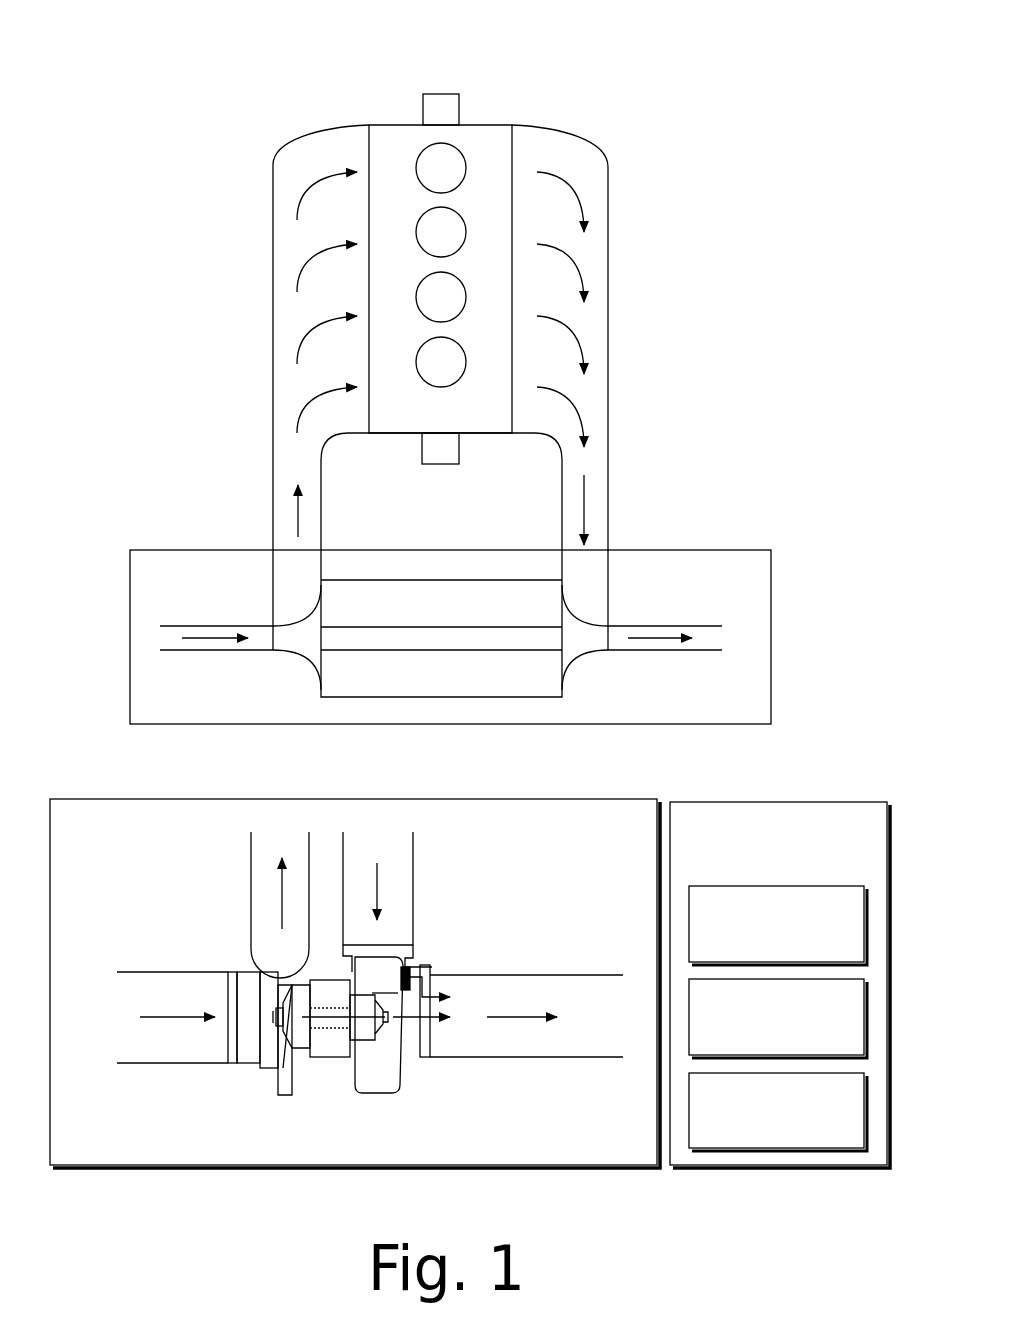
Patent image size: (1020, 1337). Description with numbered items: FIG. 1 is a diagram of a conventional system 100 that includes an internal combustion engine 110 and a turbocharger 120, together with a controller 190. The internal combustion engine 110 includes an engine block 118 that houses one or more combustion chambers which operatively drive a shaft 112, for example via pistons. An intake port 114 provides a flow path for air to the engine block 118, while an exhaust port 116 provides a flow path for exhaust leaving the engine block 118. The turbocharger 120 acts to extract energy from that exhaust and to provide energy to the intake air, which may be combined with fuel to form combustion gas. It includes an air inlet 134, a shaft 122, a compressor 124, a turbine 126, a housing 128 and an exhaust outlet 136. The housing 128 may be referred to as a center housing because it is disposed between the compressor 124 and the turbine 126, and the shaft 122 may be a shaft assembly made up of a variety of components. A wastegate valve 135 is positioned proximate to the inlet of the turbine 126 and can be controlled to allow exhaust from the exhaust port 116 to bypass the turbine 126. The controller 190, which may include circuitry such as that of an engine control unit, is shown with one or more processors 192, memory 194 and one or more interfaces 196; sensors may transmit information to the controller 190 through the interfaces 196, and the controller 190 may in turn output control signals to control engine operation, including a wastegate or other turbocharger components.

The system 100 is at (603, 52).
The internal combustion engine 110 is at (403, 122).
The shaft 112 is at (443, 94).
The intake port 114 is at (293, 143).
The exhaust port 116 is at (603, 152).
The engine block 118 is at (460, 426).
The turbocharger 120 is at (668, 550).
The shaft 122 is at (440, 652).
The compressor 124 is at (300, 662).
The turbine 126 is at (583, 660).
The housing 128 is at (460, 611).
The air inlet 134 is at (236, 622).
The wastegate valve 135 is at (410, 968).
The exhaust outlet 136 is at (668, 626).
The controller 190 is at (780, 985).
The processors 192 is at (778, 925).
The memory 194 is at (778, 1018).
The interfaces 196 is at (778, 1112).